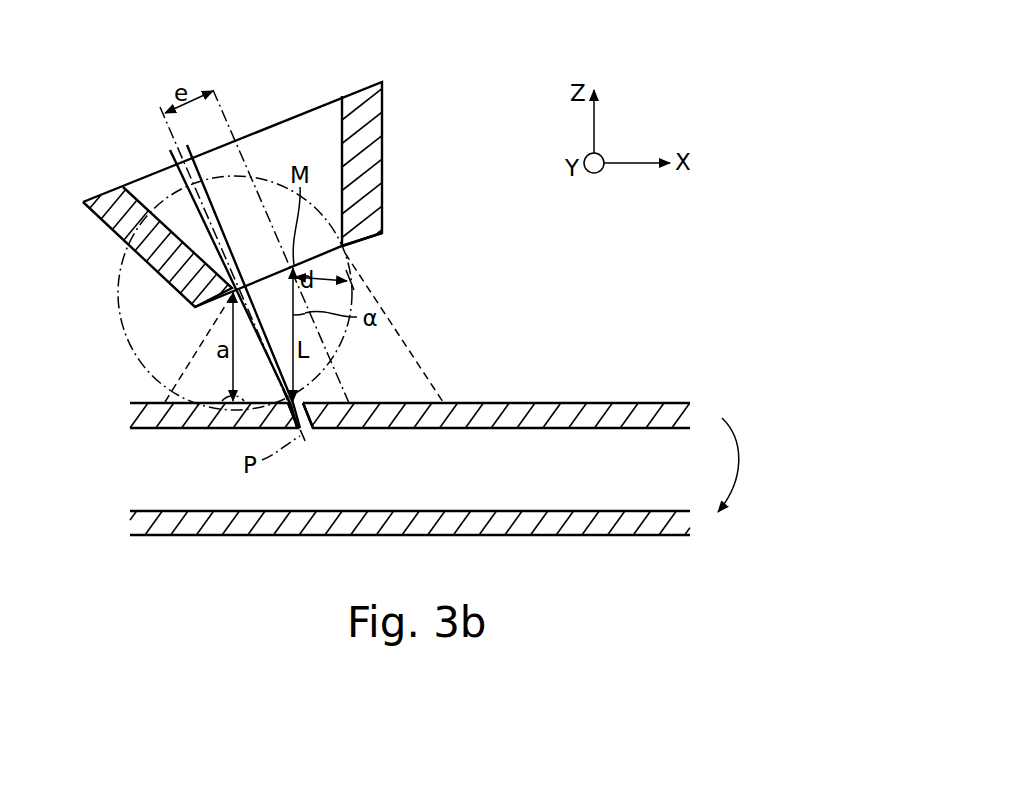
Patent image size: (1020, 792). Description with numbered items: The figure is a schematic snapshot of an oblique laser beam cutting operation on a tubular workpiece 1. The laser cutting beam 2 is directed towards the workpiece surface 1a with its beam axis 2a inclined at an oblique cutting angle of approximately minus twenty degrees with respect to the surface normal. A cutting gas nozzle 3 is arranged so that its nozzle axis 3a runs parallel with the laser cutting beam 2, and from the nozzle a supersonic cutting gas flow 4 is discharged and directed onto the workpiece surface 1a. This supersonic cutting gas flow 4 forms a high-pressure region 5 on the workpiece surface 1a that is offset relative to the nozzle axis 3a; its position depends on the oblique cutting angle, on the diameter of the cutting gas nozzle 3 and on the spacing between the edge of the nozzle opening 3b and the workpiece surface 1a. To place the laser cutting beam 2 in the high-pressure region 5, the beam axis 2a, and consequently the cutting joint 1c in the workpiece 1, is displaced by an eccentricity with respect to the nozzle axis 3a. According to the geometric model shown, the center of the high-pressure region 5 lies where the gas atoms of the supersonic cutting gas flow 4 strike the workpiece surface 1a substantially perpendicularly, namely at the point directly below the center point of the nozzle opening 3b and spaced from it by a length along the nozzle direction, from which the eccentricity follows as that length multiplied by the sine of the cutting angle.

The tubular workpiece 1 is at (384, 427).
The workpiece surface 1a is at (549, 401).
The cutting joint 1c is at (304, 432).
The laser cutting beam 2 is at (180, 176).
The beam axis 2a is at (171, 130).
The cutting gas nozzle 3 is at (358, 112).
The nozzle axis 3a is at (228, 122).
The nozzle opening 3b is at (340, 248).
The supersonic cutting gas flow 4 is at (200, 345).
The high-pressure region 5 is at (300, 393).